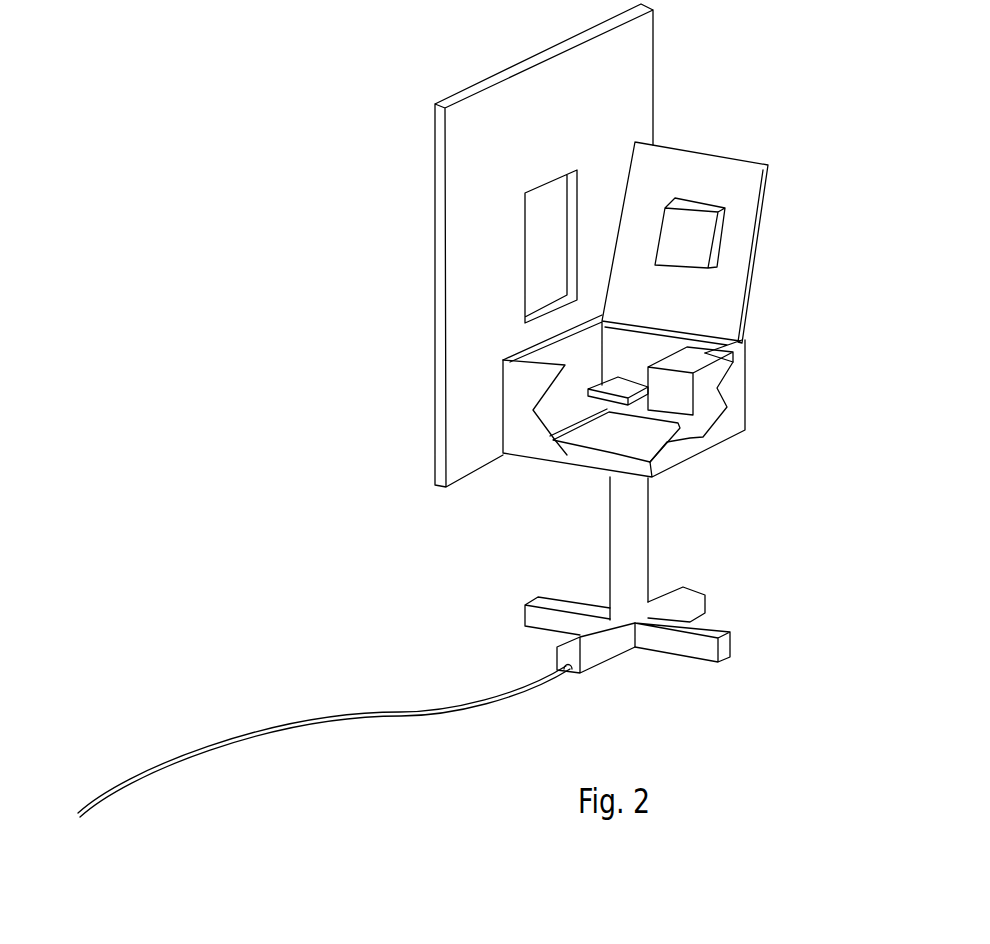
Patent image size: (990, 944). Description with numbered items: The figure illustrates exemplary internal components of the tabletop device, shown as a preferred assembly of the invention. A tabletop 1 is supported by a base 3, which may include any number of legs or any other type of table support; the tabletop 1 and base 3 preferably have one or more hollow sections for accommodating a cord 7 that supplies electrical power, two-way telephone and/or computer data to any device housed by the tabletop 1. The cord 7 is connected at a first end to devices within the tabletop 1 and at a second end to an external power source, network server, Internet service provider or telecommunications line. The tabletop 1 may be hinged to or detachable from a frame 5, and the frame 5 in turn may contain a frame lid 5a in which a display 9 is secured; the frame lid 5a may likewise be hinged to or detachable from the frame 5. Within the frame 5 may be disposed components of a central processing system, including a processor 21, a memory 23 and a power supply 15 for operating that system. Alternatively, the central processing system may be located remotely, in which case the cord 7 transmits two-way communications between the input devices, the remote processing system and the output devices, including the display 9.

The tabletop 1 is at (433, 147).
The base 3 is at (742, 652).
The frame 5 is at (527, 445).
The frame lid 5a is at (772, 240).
The cord 7 is at (411, 708).
The display 9 is at (700, 198).
The power supply 15 is at (704, 403).
The processor 21 is at (607, 443).
The memory 23 is at (612, 410).